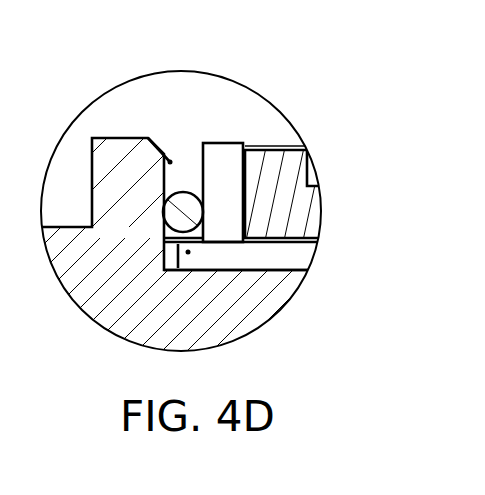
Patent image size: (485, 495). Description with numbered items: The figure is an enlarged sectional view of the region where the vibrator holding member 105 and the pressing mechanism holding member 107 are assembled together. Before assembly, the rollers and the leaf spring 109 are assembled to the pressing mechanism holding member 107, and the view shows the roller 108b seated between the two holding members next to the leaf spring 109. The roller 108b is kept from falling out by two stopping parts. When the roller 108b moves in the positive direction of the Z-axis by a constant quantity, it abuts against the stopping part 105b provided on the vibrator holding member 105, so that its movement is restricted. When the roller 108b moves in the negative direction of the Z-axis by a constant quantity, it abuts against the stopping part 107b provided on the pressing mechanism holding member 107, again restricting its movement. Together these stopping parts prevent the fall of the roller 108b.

The vibrator holding member 105 is at (100, 187).
The stopping part 105b is at (170, 162).
The pressing mechanism holding member 107 is at (300, 220).
The stopping part 107b is at (188, 252).
The roller 108b is at (203, 185).
The leaf spring 109 is at (228, 148).